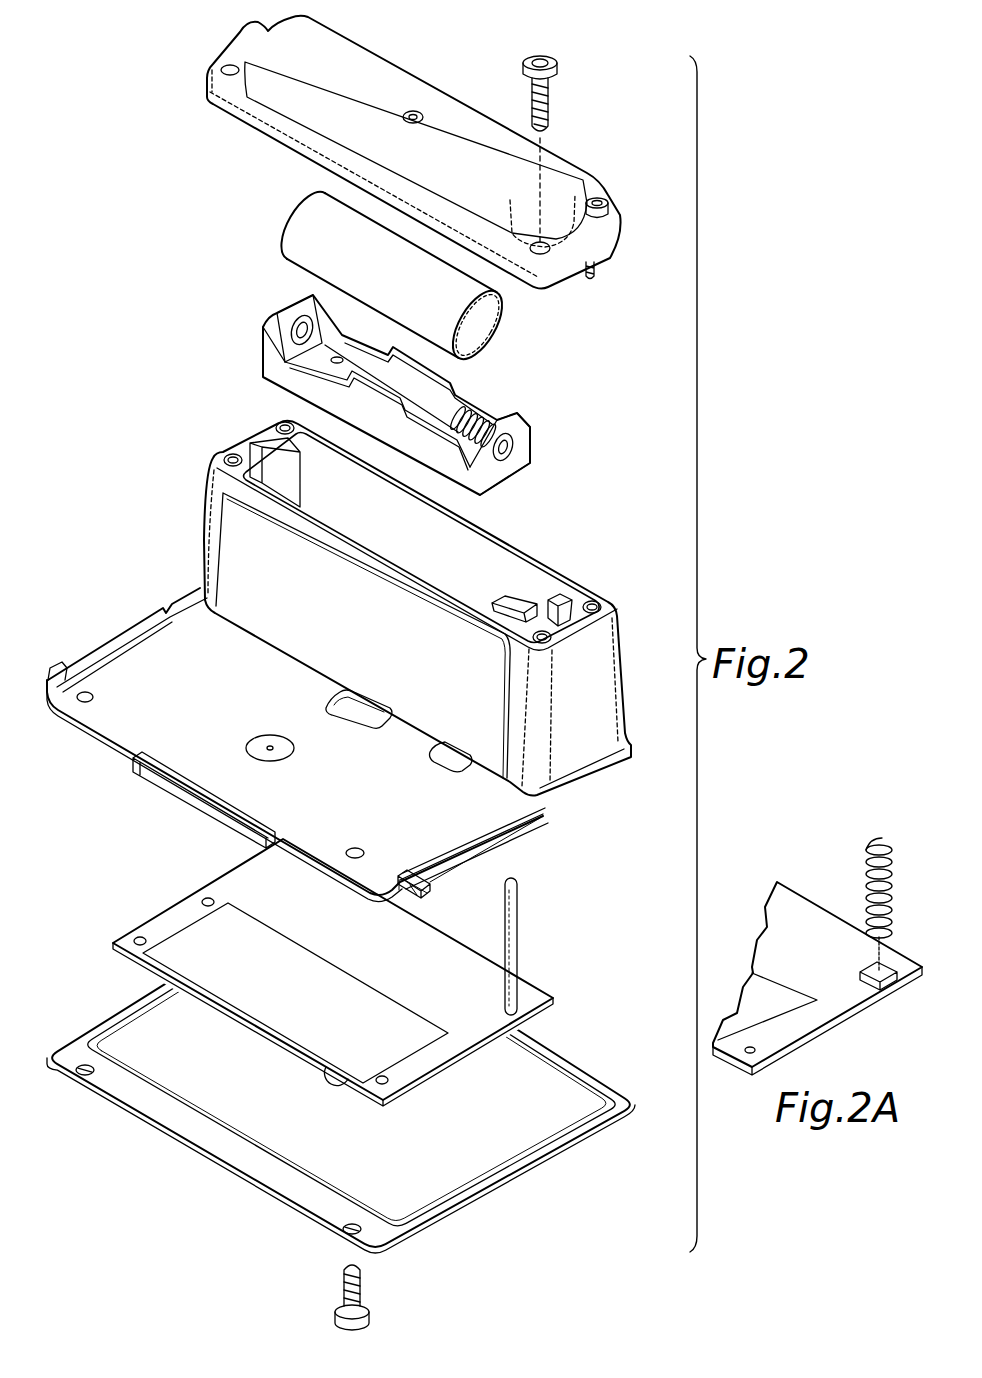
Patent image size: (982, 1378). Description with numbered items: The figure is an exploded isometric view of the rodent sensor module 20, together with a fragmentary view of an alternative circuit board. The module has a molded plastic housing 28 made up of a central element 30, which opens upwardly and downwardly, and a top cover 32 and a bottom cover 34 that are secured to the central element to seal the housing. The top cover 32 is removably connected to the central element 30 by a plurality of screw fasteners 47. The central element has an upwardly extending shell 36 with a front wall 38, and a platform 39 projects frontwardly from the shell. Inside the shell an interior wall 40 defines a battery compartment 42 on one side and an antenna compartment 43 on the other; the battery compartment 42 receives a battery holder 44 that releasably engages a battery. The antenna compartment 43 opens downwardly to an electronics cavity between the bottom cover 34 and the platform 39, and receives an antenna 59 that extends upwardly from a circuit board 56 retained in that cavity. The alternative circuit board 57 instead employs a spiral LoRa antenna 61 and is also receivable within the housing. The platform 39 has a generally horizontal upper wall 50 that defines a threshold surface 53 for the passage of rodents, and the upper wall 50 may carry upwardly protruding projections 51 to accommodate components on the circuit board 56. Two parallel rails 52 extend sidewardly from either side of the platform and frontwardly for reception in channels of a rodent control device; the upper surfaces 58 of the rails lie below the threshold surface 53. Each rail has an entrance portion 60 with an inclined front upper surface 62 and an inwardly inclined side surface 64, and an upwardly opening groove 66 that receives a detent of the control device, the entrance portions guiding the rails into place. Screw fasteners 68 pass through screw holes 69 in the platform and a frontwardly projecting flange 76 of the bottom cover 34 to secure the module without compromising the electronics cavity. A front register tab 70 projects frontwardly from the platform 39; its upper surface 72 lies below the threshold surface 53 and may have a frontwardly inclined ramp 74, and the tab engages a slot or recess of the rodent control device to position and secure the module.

In FIG. 2, the sensor module 20 is at (163, 444).
In FIG. 2, the housing 28 is at (411, 608).
In FIG. 2, the central element 30 is at (628, 702).
In FIG. 2, the top cover 32 is at (562, 160).
In FIG. 2, the bottom cover 34 is at (341, 1075).
In FIG. 2, the shell 36 is at (203, 545).
In FIG. 2, the front wall 38 is at (420, 657).
In FIG. 2, the platform 39 is at (92, 722).
In FIG. 2, the interior wall 40 is at (514, 597).
In FIG. 2, the battery compartment 42 is at (342, 528).
In FIG. 2, the antenna compartment 43 is at (566, 600).
In FIG. 2, the battery holder 44 is at (527, 420).
In FIG. 2, the screw fasteners 47 is at (556, 58).
In FIG. 2, the upper wall 50 is at (291, 773).
In FIG. 2, the projections 51 is at (440, 758).
In FIG. 2, the rails 52 is at (142, 608).
In FIG. 2, the threshold surface 53 is at (291, 773).
In FIG. 2, the circuit board 56 is at (353, 972).
In FIG. 2A, the alternative circuit board 57 is at (752, 946).
In FIG. 2, the upper surfaces of the rails 58 is at (446, 872).
In FIG. 2, the antenna 59 is at (520, 922).
In FIG. 2, the entrance portion 60 is at (400, 892).
In FIG. 2A, the spiral LoRa antenna 61 is at (862, 873).
In FIG. 2, the inclined front upper surface 62 is at (397, 878).
In FIG. 2, the inwardly inclined side surface 64 is at (418, 893).
In FIG. 2, the groove 66 is at (52, 668).
In FIG. 2, the screw fasteners 68 is at (368, 1296).
In FIG. 2, the screw holes 69 is at (355, 848).
In FIG. 2, the front register tab 70 is at (193, 800).
In FIG. 2, the upper surface 72 is at (153, 762).
In FIG. 2, the ramp 74 is at (215, 816).
In FIG. 2, the flange 76 is at (180, 1146).